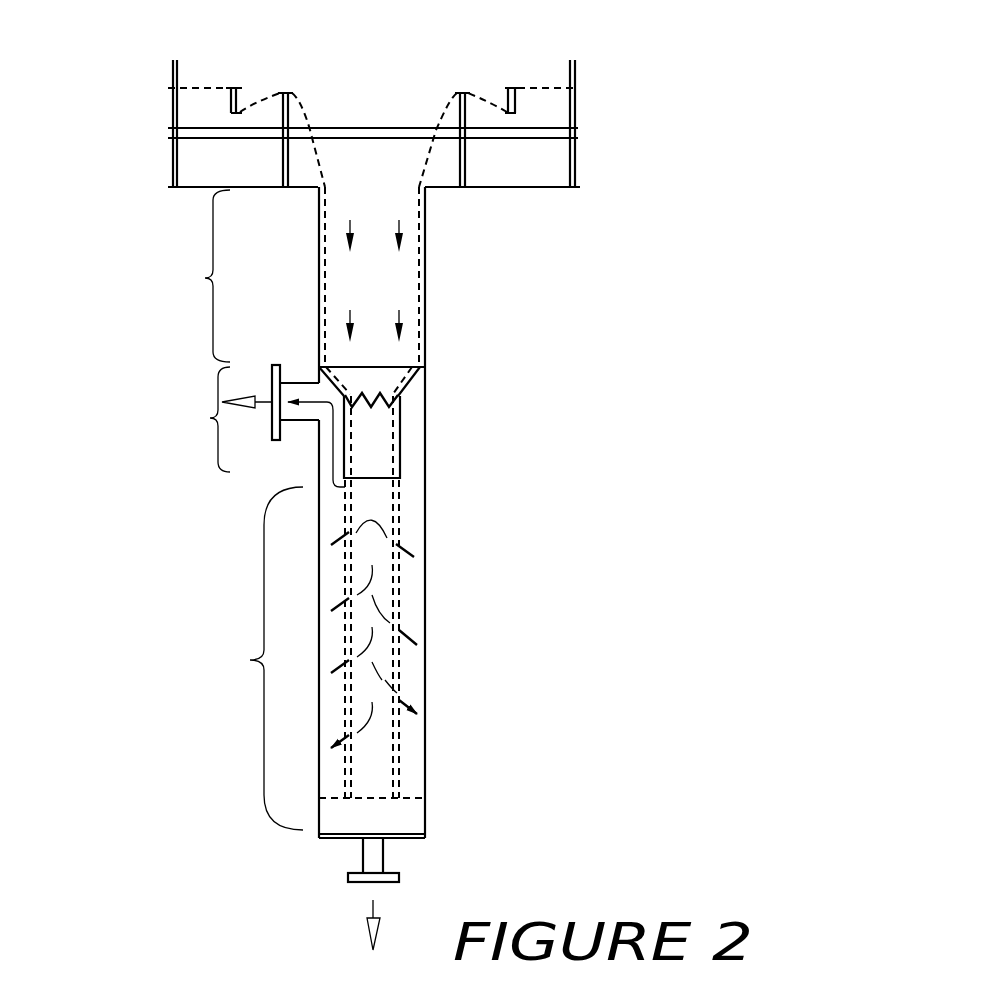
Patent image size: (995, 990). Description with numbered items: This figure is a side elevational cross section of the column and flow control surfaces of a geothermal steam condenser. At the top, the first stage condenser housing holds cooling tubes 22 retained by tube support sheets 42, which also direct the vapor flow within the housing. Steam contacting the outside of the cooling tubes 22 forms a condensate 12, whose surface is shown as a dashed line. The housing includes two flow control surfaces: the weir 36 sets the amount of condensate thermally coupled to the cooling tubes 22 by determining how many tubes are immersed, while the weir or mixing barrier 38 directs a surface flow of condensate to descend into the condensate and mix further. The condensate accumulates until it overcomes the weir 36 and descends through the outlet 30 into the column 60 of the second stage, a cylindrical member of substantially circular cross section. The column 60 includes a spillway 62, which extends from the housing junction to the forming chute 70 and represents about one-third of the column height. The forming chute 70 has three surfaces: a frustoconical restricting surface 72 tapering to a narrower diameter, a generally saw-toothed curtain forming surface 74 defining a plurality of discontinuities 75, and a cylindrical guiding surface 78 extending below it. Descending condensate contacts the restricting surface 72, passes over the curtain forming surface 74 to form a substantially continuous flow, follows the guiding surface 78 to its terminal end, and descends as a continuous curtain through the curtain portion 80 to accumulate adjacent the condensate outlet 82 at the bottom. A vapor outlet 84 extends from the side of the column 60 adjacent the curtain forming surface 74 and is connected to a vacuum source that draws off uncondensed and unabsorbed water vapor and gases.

The condensate 12 is at (549, 86).
The cooling tubes 22 is at (549, 126).
The flow control surface 38 is at (237, 86).
The flow control surface 36 is at (282, 153).
The tube support sheets 42 is at (170, 164).
The outlet 30 is at (426, 190).
The spillway 62 is at (200, 276).
The curtain forming surface 74 is at (396, 393).
The discontinuities 75 is at (369, 394).
The restricting surface 72 is at (410, 397).
The guiding surface 78 is at (401, 448).
The column 60 is at (469, 574).
The curtain portion 80 is at (258, 658).
The forming chute 70 is at (261, 427).
The vapor outlet 84 is at (270, 406).
The condensate outlet 82 is at (369, 884).